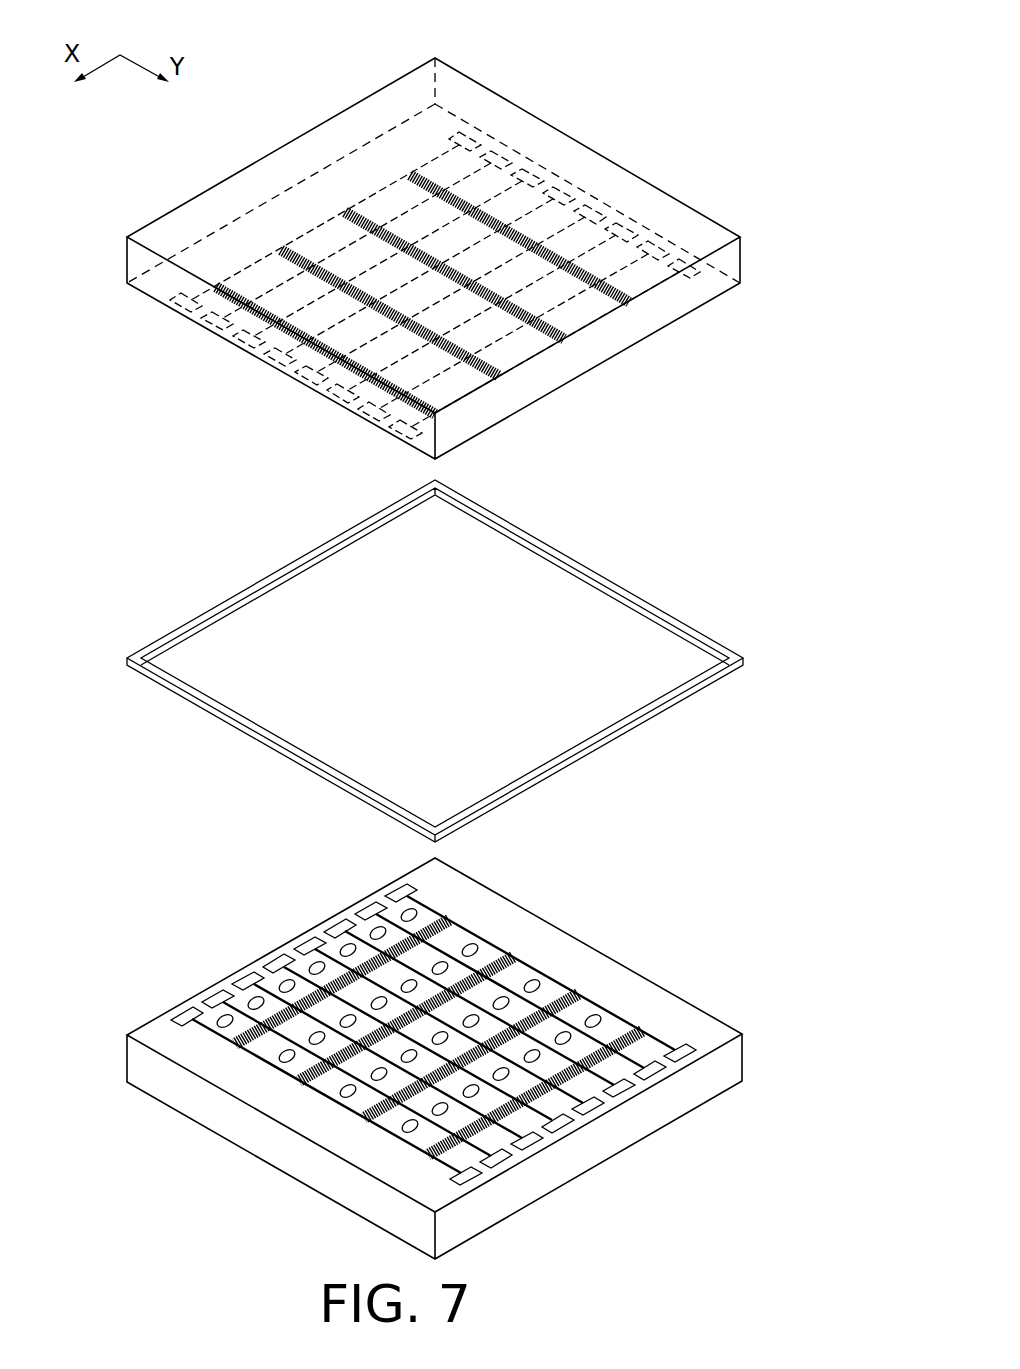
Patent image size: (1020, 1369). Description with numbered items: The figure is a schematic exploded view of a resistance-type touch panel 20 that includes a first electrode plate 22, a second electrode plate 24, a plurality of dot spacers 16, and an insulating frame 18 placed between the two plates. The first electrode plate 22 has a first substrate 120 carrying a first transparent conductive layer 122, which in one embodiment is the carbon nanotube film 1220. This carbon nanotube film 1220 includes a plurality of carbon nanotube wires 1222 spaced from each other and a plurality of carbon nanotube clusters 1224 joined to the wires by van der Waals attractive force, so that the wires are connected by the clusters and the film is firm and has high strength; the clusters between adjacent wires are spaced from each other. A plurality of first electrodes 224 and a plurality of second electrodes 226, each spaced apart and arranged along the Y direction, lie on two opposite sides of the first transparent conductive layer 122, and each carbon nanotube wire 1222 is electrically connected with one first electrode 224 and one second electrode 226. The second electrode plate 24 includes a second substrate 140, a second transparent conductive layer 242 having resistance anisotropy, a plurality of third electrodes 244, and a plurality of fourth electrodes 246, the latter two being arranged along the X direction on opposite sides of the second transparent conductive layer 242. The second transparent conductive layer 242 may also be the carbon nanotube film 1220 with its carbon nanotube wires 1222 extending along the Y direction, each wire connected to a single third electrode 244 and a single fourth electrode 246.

The resistance-type touch panel 20 is at (524, 46).
The first substrate 120 is at (676, 305).
The first transparent conductive layer 122 is at (301, 203).
The first electrode plate 22 is at (677, 181).
The first electrodes 224 is at (176, 303).
The second electrodes 226 is at (472, 136).
The carbon nanotube film 1220 is at (612, 483).
The carbon nanotube wires 1222 is at (443, 378).
The carbon nanotube clusters 1224 is at (468, 357).
The insulating frame 18 is at (655, 607).
The second electrode plate 24 is at (644, 955).
The second substrate 140 is at (620, 1133).
The third electrodes 244 is at (182, 1016).
The fourth electrodes 246 is at (688, 1052).
The second transparent conductive layer 242 is at (250, 1069).
The dot spacers 16 is at (287, 984).